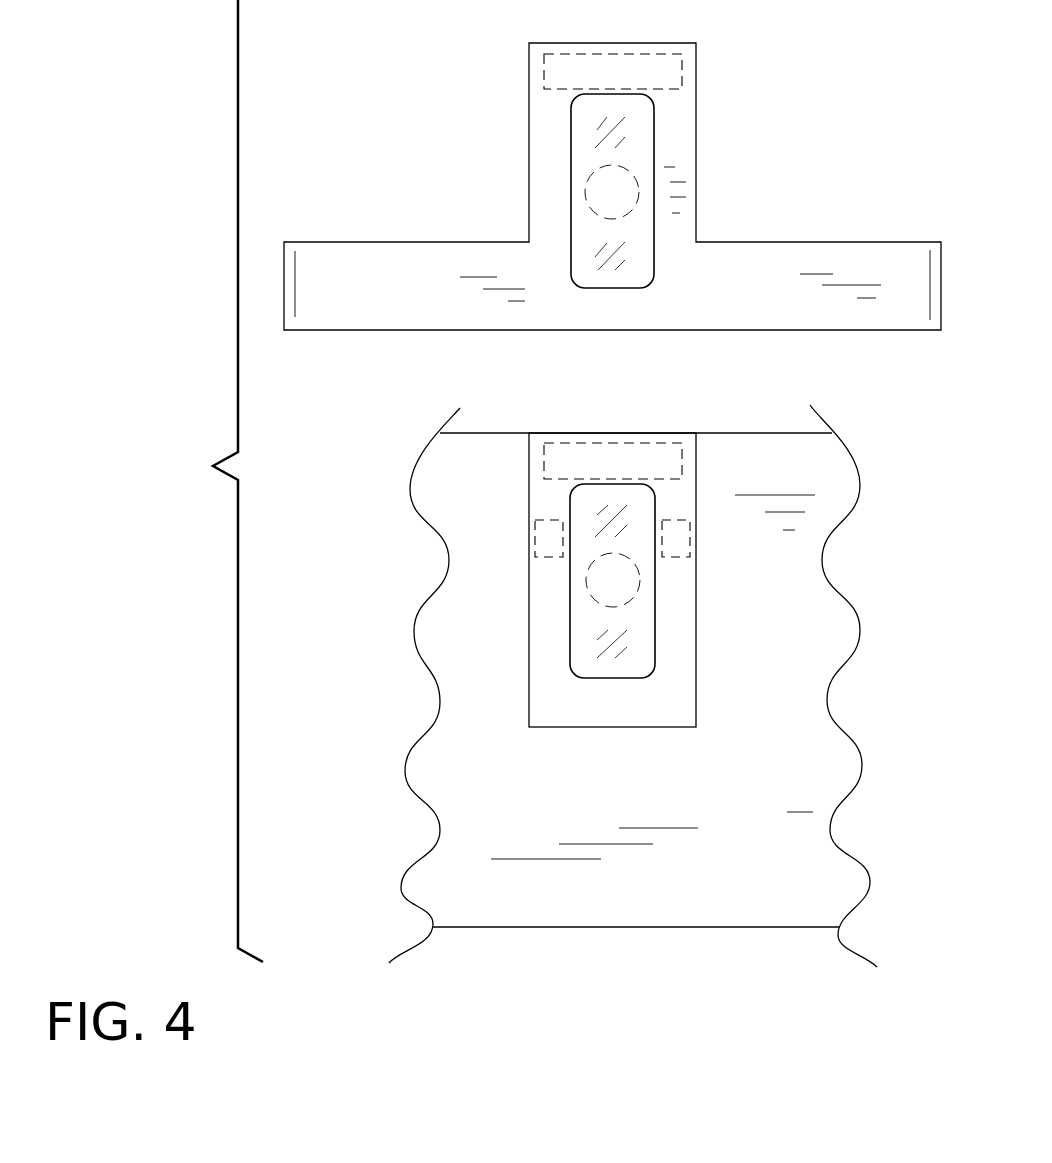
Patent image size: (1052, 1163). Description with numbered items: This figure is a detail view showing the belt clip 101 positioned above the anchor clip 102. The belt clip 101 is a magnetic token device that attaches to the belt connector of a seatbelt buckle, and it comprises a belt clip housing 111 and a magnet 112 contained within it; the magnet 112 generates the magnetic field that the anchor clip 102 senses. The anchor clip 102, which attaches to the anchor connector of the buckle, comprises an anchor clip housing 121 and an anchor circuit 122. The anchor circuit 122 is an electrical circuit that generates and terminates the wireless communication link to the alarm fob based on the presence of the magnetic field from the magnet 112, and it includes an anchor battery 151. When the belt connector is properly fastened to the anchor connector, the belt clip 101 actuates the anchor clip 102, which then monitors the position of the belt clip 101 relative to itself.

The belt clip 101 is at (406, 97).
The anchor clip 102 is at (395, 418).
The belt clip housing 111 is at (683, 168).
The magnet 112 is at (622, 177).
The anchor clip housing 121 is at (787, 487).
The anchor circuit 122 is at (663, 518).
The anchor battery 151 is at (608, 587).